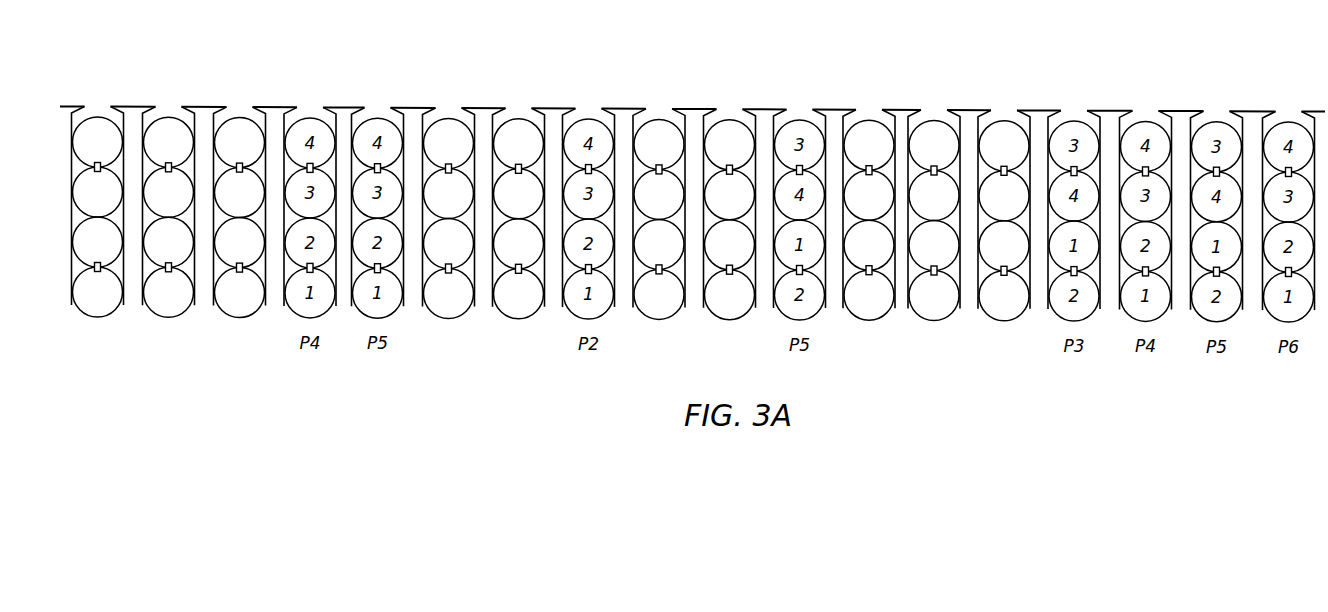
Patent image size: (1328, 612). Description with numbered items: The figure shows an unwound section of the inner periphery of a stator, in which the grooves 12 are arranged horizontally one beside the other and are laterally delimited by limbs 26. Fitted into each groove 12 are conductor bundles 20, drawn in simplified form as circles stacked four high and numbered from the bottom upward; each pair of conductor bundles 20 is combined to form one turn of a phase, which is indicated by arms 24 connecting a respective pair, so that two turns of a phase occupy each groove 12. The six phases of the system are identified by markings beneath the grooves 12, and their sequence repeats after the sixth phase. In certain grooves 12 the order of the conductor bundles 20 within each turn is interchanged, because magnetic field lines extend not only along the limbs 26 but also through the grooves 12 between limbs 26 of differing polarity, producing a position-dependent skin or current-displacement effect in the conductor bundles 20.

The groove 12 is at (100, 108).
The conductor bundle 20 is at (520, 293).
The arm 24 is at (653, 252).
The limb 26 is at (345, 110).